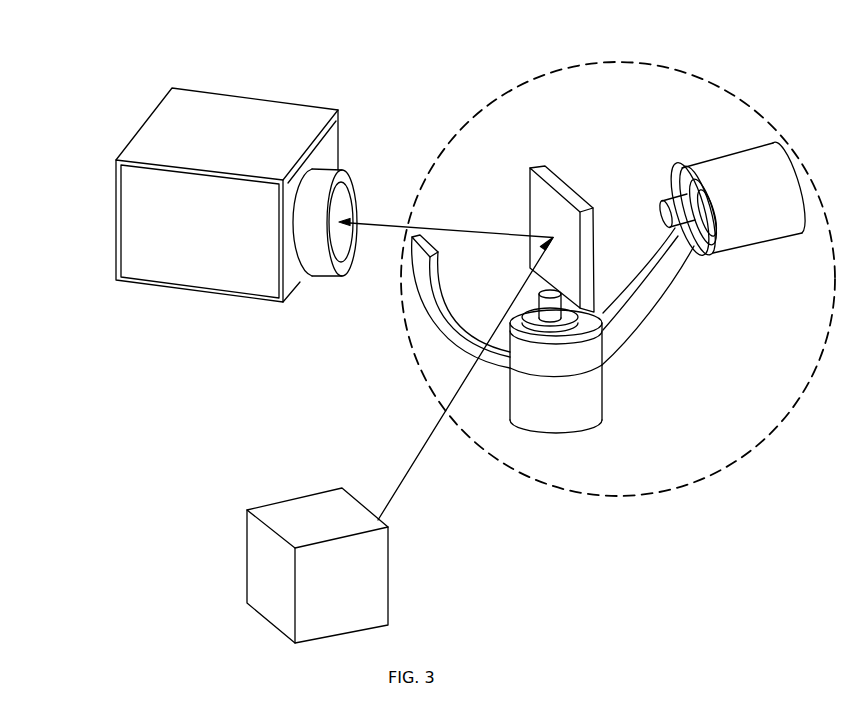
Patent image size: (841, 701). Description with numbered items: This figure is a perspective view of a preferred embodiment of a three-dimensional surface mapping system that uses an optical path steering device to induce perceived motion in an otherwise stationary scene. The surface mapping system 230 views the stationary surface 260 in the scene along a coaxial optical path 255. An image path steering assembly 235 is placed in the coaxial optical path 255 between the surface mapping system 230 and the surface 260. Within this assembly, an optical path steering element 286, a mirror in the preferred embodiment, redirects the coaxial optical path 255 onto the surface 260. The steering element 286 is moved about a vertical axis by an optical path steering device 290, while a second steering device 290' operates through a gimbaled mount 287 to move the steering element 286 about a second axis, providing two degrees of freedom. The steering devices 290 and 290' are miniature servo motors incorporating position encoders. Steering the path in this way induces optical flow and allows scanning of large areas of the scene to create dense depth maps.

The surface mapping system 230 is at (150, 108).
The image path steering assembly 235 is at (619, 62).
The coaxial optical path 255 is at (437, 425).
The stationary surface 260 is at (273, 503).
The optical path steering element 286 is at (528, 171).
The gimbaled mount 287 is at (670, 318).
The optical path steering device 290 is at (589, 378).
The second optical path steering device 290' is at (731, 278).